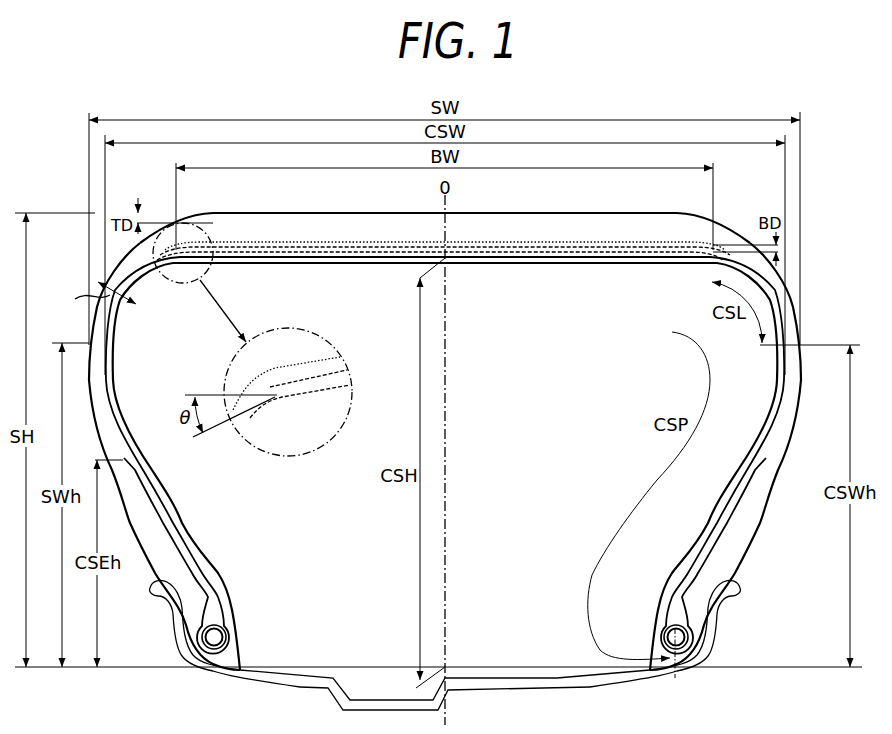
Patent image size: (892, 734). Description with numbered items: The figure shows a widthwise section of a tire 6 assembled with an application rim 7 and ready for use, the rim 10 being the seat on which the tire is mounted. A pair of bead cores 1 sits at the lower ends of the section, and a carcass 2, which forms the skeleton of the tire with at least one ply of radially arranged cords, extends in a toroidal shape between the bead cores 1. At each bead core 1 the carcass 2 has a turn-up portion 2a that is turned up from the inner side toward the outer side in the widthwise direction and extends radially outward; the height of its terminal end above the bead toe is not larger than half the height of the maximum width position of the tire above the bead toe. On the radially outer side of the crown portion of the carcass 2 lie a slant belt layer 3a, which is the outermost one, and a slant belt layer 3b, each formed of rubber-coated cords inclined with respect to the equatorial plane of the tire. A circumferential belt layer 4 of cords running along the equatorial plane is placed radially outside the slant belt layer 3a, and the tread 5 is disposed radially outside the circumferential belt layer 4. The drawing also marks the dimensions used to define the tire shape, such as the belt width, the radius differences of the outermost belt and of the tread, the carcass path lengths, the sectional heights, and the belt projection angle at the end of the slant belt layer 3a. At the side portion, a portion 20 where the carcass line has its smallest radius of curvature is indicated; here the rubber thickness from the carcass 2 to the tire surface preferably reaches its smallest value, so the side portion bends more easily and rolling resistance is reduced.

The bead core 1 is at (216, 637).
The carcass 2 is at (779, 413).
The turn-up portion 2a is at (160, 527).
The slant belt layer 3a is at (703, 252).
The slant belt layer 3b is at (678, 257).
The circumferential belt layer 4 is at (602, 242).
The tread 5 is at (320, 213).
The tire 6 is at (84, 262).
The application rim 7 is at (719, 612).
The rim 10 is at (243, 666).
The portion where the carcass line has the smallest radius of curvature 20 is at (119, 306).